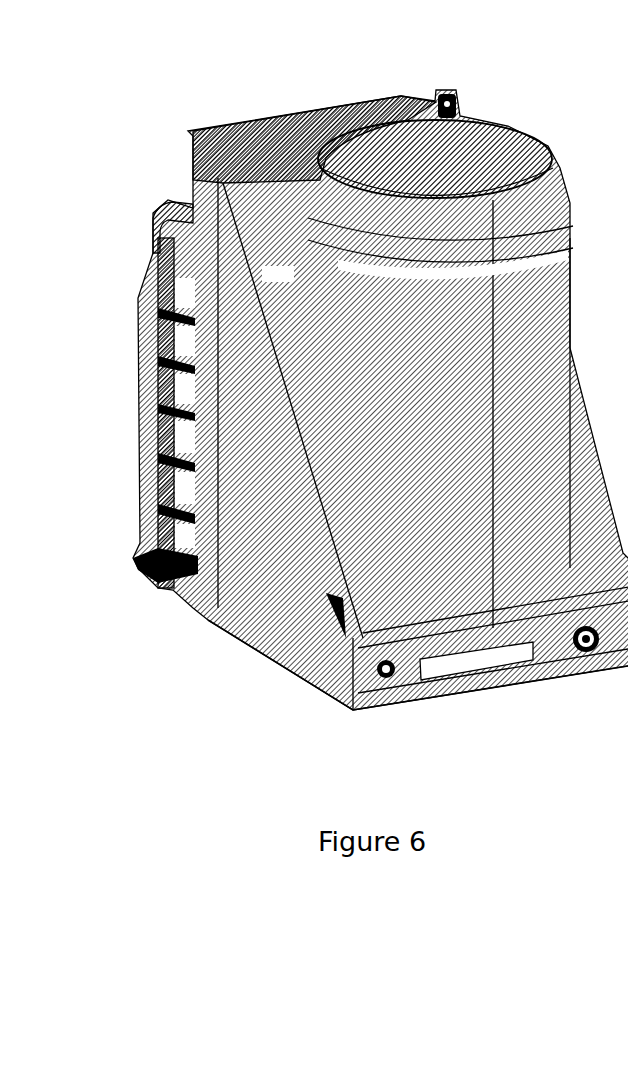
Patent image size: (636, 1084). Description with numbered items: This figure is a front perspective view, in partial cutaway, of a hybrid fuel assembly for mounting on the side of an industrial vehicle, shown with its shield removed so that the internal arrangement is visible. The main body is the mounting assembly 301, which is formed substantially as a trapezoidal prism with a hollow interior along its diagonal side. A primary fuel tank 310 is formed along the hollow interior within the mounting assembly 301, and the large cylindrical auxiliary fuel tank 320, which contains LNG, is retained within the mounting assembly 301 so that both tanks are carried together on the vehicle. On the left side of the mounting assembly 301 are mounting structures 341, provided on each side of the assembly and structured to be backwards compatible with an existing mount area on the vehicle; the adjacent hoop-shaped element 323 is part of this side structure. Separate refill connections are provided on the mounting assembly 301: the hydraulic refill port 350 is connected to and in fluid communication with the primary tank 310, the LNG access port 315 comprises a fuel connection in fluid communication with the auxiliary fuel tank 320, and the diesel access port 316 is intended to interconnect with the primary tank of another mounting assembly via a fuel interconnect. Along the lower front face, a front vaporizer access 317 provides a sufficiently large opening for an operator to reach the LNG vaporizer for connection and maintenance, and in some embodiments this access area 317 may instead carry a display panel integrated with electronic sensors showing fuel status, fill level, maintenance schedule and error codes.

The mounting assembly 301 is at (478, 63).
The primary fuel tank 310 is at (245, 130).
The auxiliary fuel tank 320 is at (535, 140).
The handrail hoop 323 is at (165, 212).
The mounting structure 341 is at (185, 125).
The hydraulic refill port 350 is at (350, 626).
The LNG access port 315 is at (380, 668).
The front vaporizer access 317 is at (478, 660).
The diesel access port 316 is at (580, 644).